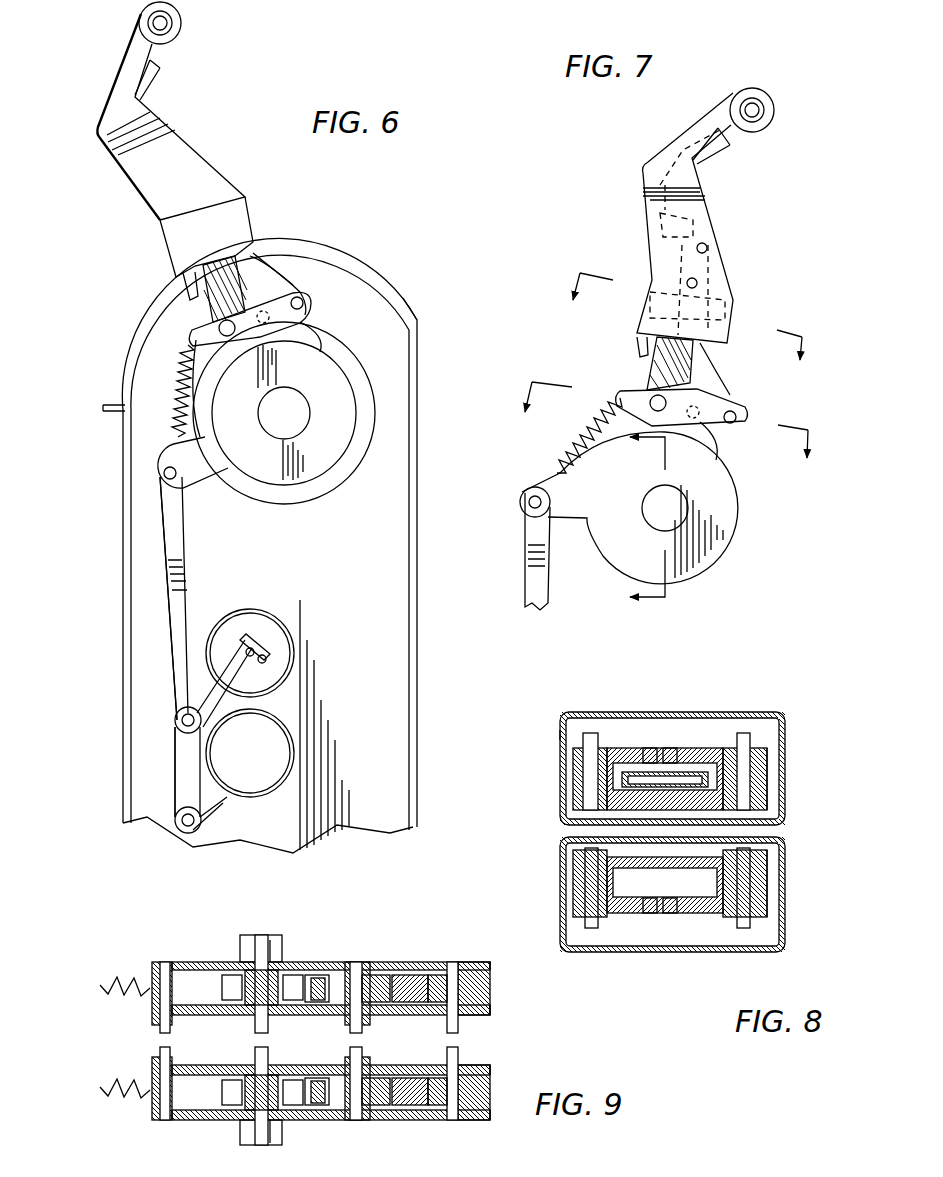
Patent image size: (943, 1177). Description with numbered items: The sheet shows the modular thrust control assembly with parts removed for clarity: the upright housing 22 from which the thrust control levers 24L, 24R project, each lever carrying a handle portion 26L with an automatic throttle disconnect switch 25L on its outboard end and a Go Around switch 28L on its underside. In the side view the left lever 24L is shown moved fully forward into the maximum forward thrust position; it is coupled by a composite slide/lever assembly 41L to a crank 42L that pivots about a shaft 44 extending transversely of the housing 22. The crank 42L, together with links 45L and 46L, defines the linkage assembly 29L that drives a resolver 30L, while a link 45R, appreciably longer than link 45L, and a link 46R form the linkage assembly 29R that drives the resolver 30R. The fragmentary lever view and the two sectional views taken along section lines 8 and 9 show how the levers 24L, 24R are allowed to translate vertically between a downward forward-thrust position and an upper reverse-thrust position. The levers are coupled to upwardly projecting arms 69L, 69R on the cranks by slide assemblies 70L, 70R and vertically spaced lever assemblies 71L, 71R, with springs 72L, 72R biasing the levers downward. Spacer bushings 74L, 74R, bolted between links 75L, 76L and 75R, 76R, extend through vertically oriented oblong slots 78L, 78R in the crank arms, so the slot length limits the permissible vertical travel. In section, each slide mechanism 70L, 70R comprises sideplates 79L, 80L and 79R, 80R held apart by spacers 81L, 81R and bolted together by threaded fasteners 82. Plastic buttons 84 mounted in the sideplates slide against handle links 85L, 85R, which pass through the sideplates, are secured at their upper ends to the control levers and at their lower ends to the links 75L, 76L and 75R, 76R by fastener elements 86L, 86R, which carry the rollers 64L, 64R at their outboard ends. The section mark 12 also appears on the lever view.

In FIG. 6, the upright housing 22 is at (417, 360).
In FIG. 6, the left thrust control lever 24L is at (137, 118).
In FIG. 7, the left thrust control lever 24L is at (700, 185).
In FIG. 8, the right thrust control lever 24R is at (560, 720).
In FIG. 6, the automatic throttle disconnect switch 25L is at (168, 27).
In FIG. 7, the automatic throttle disconnect switch 25L is at (760, 112).
In FIG. 6, the handle portion 26L is at (178, 12).
In FIG. 7, the handle portion 26L is at (773, 100).
In FIG. 6, the Go Around switch 28L is at (158, 75).
In FIG. 7, the Go Around switch 28L is at (725, 150).
In FIG. 6, the left linkage assembly 29L is at (165, 545).
In FIG. 6, the right linkage assembly 29R is at (170, 768).
In FIG. 6, the left resolver 30L is at (265, 620).
In FIG. 6, the right resolver 30R is at (275, 740).
In FIG. 6, the composite slide/lever assembly 41L is at (258, 220).
In FIG. 6, the left crank 42L is at (190, 475).
In FIG. 7, the left crank 42L is at (725, 520).
In FIG. 6, the shaft 44 is at (299, 422).
In FIG. 7, the shaft 44 is at (679, 517).
In FIG. 6, the left link 45L is at (180, 545).
In FIG. 7, the left link 45L is at (528, 575).
In FIG. 6, the right link 45R is at (180, 788).
In FIG. 6, the left link 46L is at (262, 685).
In FIG. 6, the right link 46R is at (222, 800).
In FIG. 9, the left roller 64L is at (270, 1130).
In FIG. 9, the right roller 64R is at (252, 940).
In FIG. 6, the upwardly projecting arm 69L is at (260, 265).
In FIG. 7, the upwardly projecting arm 69L is at (710, 375).
In FIG. 9, the upwardly projecting arm 69L is at (420, 1122).
In FIG. 9, the upwardly projecting arm 69R is at (430, 975).
In FIG. 7, the left slide assembly 70L is at (735, 300).
In FIG. 8, the left slide assembly 70L is at (780, 960).
In FIG. 8, the right slide assembly 70R is at (760, 700).
In FIG. 6, the left lever assembly 71L is at (325, 300).
In FIG. 7, the left lever assembly 71L is at (755, 412).
In FIG. 9, the left lever assembly 71L is at (412, 1128).
In FIG. 9, the right lever assembly 71R is at (375, 940).
In FIG. 6, the left spring 72L is at (185, 365).
In FIG. 7, the left spring 72L is at (572, 440).
In FIG. 9, the left spring 72L is at (115, 1088).
In FIG. 9, the right spring 72R is at (115, 980).
In FIG. 7, the left spacer bushing 74L is at (720, 468).
In FIG. 9, the left spacer bushing 74L is at (380, 1100).
In FIG. 9, the right spacer bushing 74R is at (380, 985).
In FIG. 9, the left link 75L is at (492, 1118).
In FIG. 9, the right link 75R is at (492, 965).
In FIG. 9, the left link 76L is at (492, 1068).
In FIG. 9, the right link 76R is at (492, 1010).
In FIG. 6, the oblong slot 78L is at (263, 310).
In FIG. 7, the oblong slot 78L is at (700, 415).
In FIG. 9, the oblong slot 78L is at (405, 1110).
In FIG. 9, the oblong slot 78R is at (395, 980).
In FIG. 8, the sideplate 79L is at (715, 920).
In FIG. 8, the sideplate 79R is at (745, 758).
In FIG. 8, the sideplate 80L is at (760, 865).
In FIG. 8, the sideplate 80R is at (760, 800).
In FIG. 8, the spacer 81L is at (580, 885).
In FIG. 8, the spacer 81R is at (580, 780).
In FIG. 8, the threaded fastener 82 is at (590, 740).
In FIG. 8, the plastic button 84 is at (650, 750).
In FIG. 6, the left handle link 85L is at (205, 305).
In FIG. 7, the left handle link 85L is at (660, 368).
In FIG. 8, the left handle link 85L is at (662, 920).
In FIG. 9, the left handle link 85L is at (230, 1100).
In FIG. 8, the right handle link 85R is at (685, 750).
In FIG. 9, the right handle link 85R is at (232, 980).
In FIG. 9, the left fastener element 86L is at (250, 1100).
In FIG. 9, the right fastener element 86R is at (265, 975).
In FIG. 7, the section line 8— 8 is at (682, 331).
In FIG. 7, the section line 9— 9 is at (663, 435).
In FIG. 7, the section line 12 is at (631, 519).